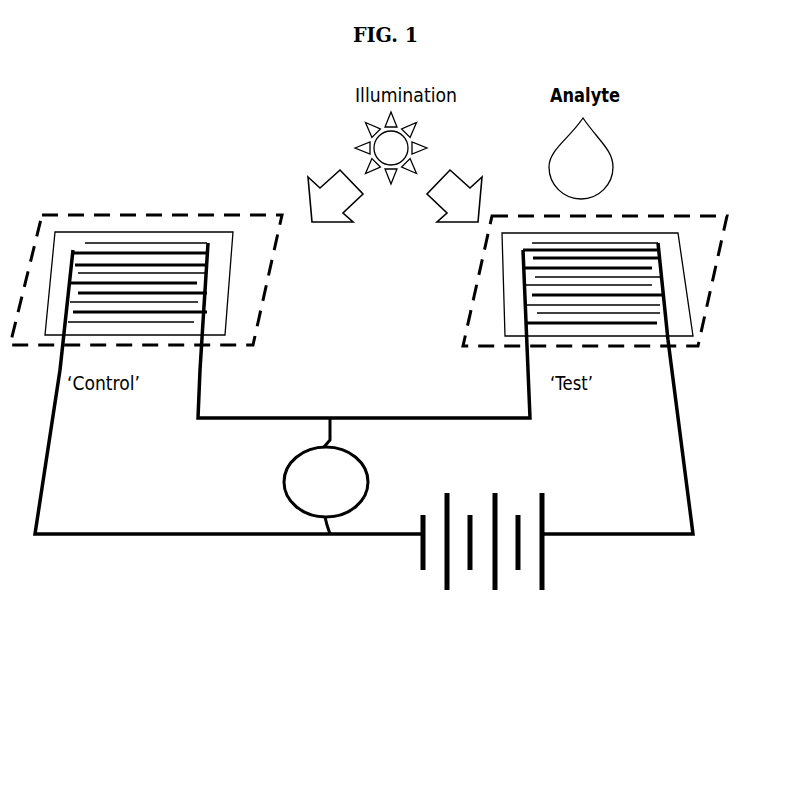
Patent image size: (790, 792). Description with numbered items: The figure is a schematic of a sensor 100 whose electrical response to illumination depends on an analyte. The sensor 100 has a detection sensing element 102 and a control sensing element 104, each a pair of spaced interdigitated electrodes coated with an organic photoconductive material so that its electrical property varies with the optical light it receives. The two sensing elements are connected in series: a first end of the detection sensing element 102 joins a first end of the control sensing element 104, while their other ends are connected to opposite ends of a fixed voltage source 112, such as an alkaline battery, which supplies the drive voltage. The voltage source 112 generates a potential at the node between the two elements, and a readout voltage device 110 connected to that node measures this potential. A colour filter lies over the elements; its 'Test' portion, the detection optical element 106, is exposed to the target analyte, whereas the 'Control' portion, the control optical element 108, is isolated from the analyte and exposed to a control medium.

The sensor 100 is at (162, 553).
The detection sensing element 102 is at (627, 322).
The control sensing element 104 is at (190, 322).
The detection optical element 106 is at (705, 237).
The control optical element 108 is at (250, 240).
The readout voltage device 110 is at (310, 448).
The fixed voltage source 112 is at (487, 598).